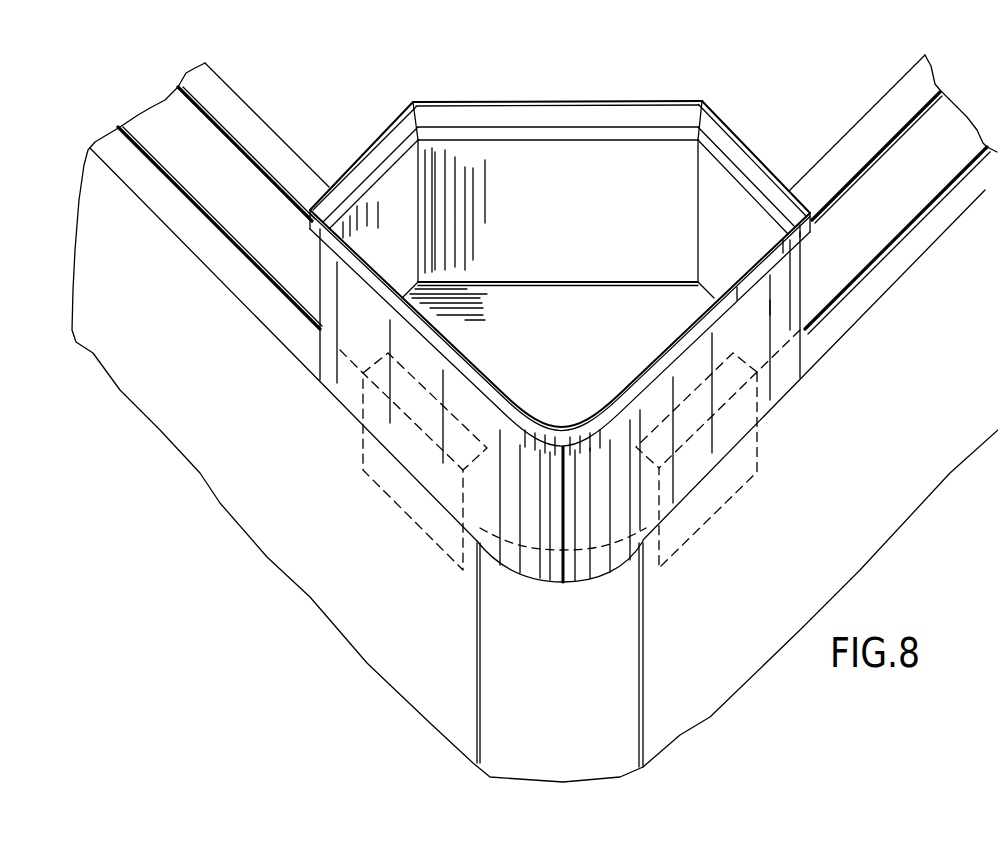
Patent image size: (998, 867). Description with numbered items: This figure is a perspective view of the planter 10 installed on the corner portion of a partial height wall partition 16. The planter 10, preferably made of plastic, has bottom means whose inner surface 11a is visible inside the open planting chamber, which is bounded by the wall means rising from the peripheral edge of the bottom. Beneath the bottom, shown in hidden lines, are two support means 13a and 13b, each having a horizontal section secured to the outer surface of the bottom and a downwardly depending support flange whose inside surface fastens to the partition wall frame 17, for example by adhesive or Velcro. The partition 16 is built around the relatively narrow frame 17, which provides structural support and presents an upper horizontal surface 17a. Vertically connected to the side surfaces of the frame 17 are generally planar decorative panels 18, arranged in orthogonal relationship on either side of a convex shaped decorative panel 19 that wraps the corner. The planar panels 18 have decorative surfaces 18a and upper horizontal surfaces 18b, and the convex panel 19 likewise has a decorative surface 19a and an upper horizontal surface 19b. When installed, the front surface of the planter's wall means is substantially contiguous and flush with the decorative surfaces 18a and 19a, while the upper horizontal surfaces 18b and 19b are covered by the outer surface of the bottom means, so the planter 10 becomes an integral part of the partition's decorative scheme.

The planter 10 is at (642, 88).
The inner surface of bottom means 11a is at (573, 357).
The first support means 13a is at (432, 541).
The second support means 13b is at (760, 443).
The partial height wall partition 16 is at (899, 533).
The partition wall frame 17 is at (842, 203).
The upper horizontal surface of frame 17a is at (914, 202).
The generally planar decorative panel 18 is at (272, 130).
The decorative surface of planar panel 18a is at (270, 432).
The upper horizontal surface of planar panel 18b is at (200, 230).
The convex shaped decorative panel 19 is at (490, 755).
The decorative surface of convex panel 19a is at (575, 700).
The upper horizontal surface of convex panel 19b is at (527, 585).